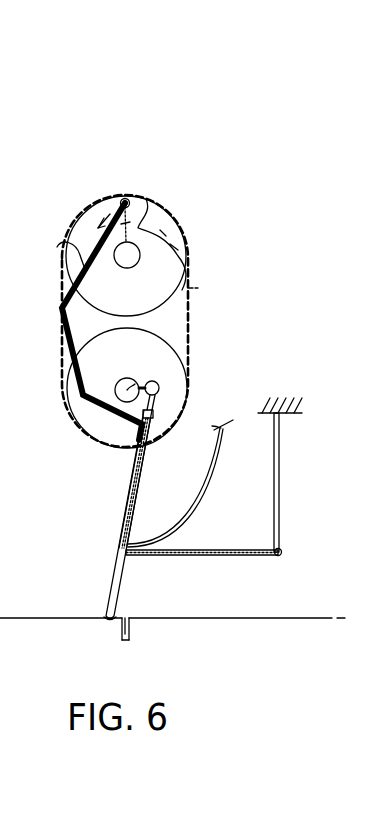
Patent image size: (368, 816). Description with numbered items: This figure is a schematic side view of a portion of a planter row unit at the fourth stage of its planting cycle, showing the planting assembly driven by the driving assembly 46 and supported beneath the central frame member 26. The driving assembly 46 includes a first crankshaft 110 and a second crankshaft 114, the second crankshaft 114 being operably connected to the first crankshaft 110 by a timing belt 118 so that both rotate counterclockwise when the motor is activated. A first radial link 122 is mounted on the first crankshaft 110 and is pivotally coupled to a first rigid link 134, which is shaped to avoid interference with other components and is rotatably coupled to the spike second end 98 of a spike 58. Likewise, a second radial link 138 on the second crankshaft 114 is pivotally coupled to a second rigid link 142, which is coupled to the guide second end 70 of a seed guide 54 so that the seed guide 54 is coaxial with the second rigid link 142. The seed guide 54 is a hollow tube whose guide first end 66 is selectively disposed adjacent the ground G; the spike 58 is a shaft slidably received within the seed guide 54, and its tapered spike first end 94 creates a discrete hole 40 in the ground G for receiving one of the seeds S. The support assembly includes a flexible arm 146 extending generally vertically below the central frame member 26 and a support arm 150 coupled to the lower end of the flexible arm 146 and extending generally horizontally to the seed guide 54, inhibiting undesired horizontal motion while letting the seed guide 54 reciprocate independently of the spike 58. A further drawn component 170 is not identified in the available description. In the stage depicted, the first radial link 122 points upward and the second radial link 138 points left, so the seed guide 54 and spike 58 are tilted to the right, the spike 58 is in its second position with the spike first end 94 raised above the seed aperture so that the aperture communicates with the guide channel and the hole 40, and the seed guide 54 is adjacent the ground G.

The first radial link 122 is at (143, 197).
The first crankshaft 110 is at (182, 253).
The timing belt 118 is at (194, 291).
The first rigid link 134 is at (68, 248).
The second radial link 138 is at (146, 382).
The second rigid link 142 is at (162, 402).
The second crankshaft 114 is at (120, 378).
The guide second end 70 is at (158, 414).
The central frame member 26 is at (294, 400).
The spike second end 98 is at (143, 438).
The spike 58 is at (128, 500).
The spike first end 94 is at (127, 520).
The curved guide 170 is at (207, 467).
The support arm 150 is at (199, 550).
The flexible arm 146 is at (280, 504).
The ground G is at (298, 617).
The seed guide 54 is at (121, 581).
The guide first end 66 is at (108, 618).
The seeds S is at (123, 638).
The hole 40 is at (130, 632).
The driving assembly 46 is at (11, 491).